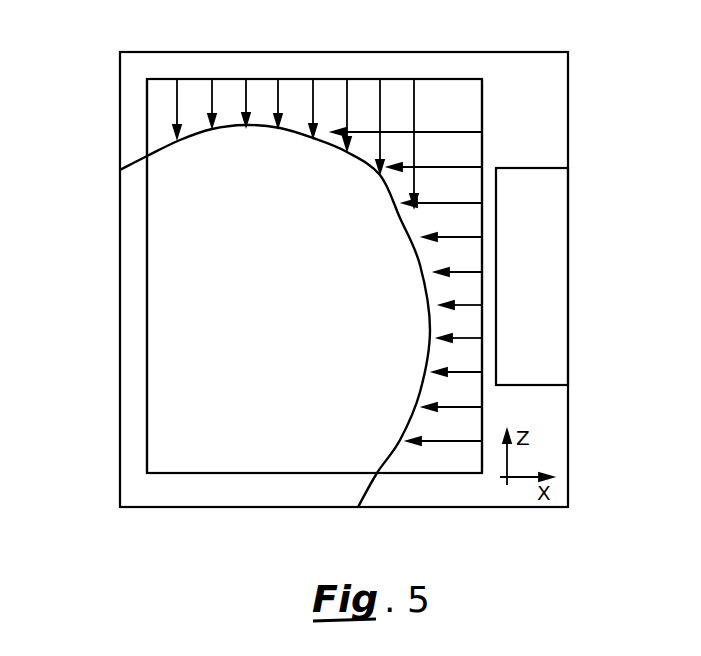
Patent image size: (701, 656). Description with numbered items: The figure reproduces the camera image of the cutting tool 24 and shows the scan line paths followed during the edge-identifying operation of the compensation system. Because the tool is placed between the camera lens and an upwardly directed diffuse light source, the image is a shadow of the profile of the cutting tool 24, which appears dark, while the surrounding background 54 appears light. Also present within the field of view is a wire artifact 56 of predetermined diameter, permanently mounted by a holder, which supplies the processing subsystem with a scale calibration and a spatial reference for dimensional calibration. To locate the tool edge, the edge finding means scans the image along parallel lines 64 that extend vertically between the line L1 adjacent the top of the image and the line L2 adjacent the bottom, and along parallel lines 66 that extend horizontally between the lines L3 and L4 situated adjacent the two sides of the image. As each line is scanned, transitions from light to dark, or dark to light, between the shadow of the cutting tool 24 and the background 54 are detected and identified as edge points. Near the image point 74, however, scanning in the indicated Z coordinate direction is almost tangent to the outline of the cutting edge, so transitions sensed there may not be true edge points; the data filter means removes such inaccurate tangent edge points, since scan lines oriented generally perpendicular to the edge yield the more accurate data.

The background 54 is at (548, 70).
The cutting tool 24 is at (130, 234).
The wire artifact 56 is at (550, 197).
The parallel scan lines 64 is at (384, 106).
The parallel scan lines 66 is at (452, 132).
The image point 74 is at (432, 328).
The line adjacent the top of the image L1 is at (258, 79).
The line adjacent the bottom of the image L2 is at (416, 473).
The line adjacent the side of the image L3 is at (147, 117).
The line adjacent the side of the image L4 is at (482, 392).